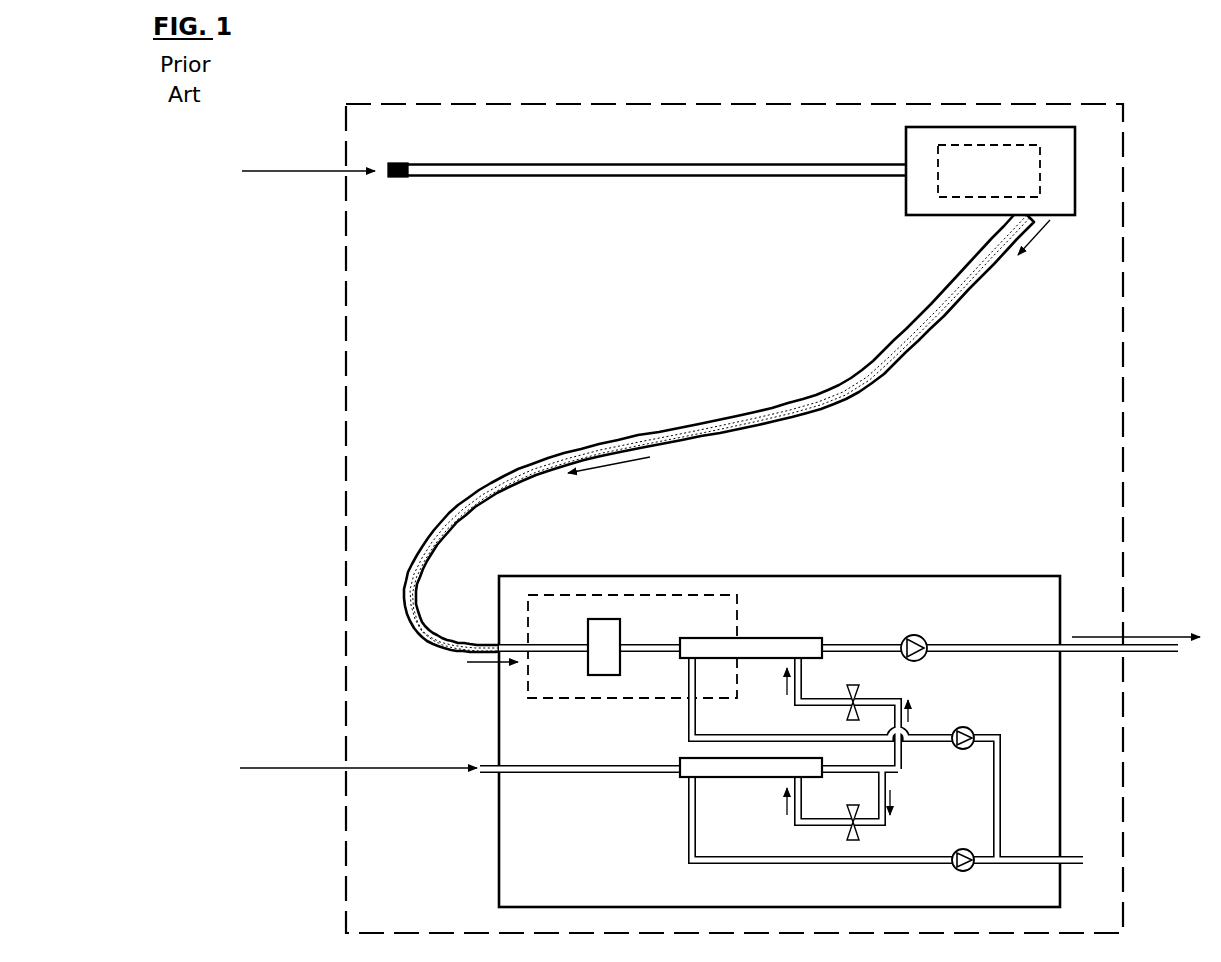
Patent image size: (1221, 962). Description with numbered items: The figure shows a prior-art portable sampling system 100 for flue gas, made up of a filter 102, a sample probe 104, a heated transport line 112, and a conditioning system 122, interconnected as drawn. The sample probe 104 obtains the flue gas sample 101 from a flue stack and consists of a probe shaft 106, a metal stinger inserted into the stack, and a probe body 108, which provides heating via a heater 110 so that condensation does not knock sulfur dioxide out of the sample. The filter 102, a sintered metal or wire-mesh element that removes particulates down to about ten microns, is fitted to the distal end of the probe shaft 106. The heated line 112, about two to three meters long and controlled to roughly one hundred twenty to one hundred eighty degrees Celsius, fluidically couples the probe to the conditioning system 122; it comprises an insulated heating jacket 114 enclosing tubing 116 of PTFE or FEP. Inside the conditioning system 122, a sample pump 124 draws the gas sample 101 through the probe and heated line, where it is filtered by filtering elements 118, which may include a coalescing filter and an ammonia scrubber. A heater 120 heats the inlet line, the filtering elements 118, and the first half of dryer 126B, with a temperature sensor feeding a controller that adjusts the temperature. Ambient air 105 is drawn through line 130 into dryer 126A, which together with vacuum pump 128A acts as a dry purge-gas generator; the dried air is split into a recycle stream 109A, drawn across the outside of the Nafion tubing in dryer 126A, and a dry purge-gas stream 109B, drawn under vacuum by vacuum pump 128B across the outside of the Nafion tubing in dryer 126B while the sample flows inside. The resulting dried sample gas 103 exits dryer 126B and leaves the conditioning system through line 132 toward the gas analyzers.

The portable sampling system 100 is at (734, 506).
The flue gas sample 101 is at (308, 214).
The filter 102 is at (410, 165).
The dried sample gas 103 is at (1146, 611).
The sample probe 104 is at (700, 220).
The ambient air 105 is at (358, 796).
The probe shaft 106 is at (647, 158).
The probe body 108 is at (953, 180).
The recycle stream 109A is at (893, 790).
The dry purge-gas stream 109B is at (907, 712).
The heater 110 is at (975, 193).
The heated transport line 112 is at (755, 355).
The insulated heating jacket 114 is at (731, 430).
The tubing 116 is at (990, 268).
The filtering elements 118 is at (607, 637).
The heater 120 is at (575, 700).
The conditioning system 122 is at (823, 710).
The sample pump 124 is at (920, 636).
The dryer 126A is at (707, 768).
The dryer 126B is at (762, 648).
The vacuum pump 128A is at (958, 870).
The vacuum pump 128B is at (968, 730).
The line 130 is at (548, 775).
The line 132 is at (998, 655).